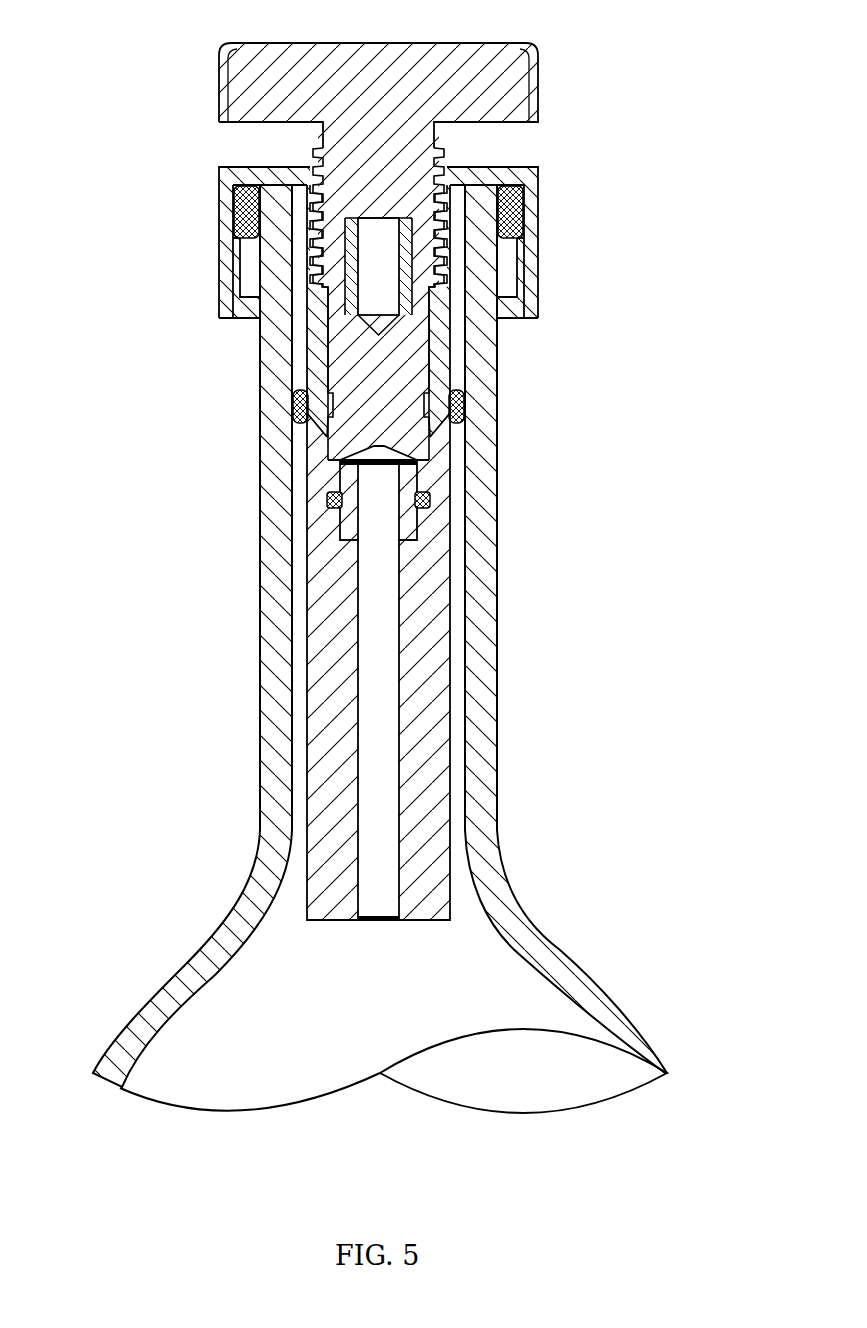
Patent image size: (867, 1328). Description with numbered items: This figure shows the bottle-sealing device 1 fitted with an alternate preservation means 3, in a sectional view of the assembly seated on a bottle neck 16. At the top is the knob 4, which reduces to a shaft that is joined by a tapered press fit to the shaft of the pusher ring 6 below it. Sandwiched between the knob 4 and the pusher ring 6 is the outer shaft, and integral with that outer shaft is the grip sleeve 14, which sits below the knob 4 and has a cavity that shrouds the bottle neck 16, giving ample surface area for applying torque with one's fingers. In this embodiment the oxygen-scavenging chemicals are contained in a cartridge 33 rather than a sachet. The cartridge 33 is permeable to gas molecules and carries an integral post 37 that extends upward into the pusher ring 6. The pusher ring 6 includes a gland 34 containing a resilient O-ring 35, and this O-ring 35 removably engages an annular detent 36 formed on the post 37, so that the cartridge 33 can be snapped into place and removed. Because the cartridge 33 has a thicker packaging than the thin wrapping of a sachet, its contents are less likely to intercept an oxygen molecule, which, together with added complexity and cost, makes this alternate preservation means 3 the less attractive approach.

The bottle-sealing device 1 is at (152, 240).
The alternate preservation means 3 is at (330, 965).
The knob 4 is at (503, 43).
The pusher ring 6 is at (313, 441).
The grip sleeve 14 is at (538, 167).
The bottle neck 16 is at (268, 318).
The cartridge 33 is at (310, 675).
The gland 34 is at (335, 508).
The resilient O-ring 35 is at (385, 462).
The annular detent 36 is at (400, 447).
The post 37 is at (347, 525).